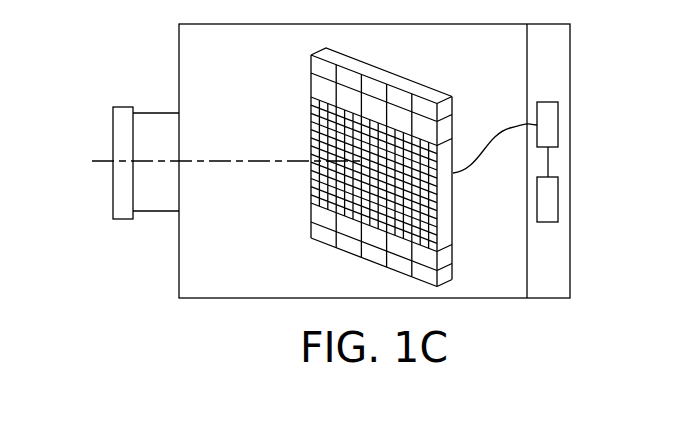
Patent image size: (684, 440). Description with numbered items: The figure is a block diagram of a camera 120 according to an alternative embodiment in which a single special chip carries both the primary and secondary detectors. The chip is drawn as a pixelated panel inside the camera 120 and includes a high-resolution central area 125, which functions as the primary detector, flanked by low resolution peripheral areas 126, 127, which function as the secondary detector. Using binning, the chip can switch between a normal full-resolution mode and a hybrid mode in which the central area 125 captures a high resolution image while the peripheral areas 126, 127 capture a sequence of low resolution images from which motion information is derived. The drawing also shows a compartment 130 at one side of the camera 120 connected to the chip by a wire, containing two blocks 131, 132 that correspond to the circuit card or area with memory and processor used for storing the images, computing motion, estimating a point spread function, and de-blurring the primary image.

The camera 120 is at (498, 65).
The high-resolution central area 125 is at (312, 133).
The low resolution peripheral area 126 is at (320, 88).
The low resolution peripheral area 127 is at (318, 232).
The electronics compartment 130 is at (570, 55).
The processing module 131 is at (558, 125).
The output module 132 is at (558, 198).